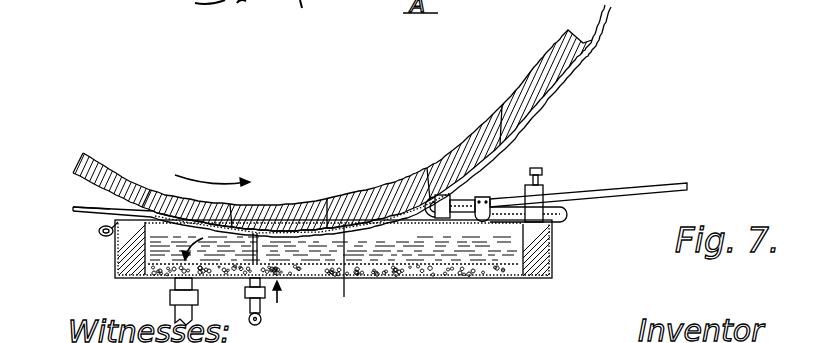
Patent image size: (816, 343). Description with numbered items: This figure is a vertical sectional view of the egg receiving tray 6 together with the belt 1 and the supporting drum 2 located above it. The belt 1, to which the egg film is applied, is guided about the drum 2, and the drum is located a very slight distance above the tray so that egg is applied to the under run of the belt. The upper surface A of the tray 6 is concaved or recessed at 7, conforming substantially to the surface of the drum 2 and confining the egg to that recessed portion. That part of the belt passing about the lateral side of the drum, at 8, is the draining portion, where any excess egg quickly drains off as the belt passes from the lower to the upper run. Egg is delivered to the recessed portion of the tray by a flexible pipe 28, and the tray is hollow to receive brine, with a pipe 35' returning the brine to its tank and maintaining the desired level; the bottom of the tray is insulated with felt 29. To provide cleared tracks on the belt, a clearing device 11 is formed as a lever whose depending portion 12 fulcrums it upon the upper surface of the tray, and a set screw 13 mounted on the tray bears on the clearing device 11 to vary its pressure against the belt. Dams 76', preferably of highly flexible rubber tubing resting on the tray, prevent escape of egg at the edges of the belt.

The supporting drum 2 is at (98, 170).
The draining portion of the belt 8 is at (617, 4).
The belt 1 is at (74, 212).
The dams 76' is at (345, 241).
The egg receiving tray 6 is at (553, 250).
The felt 29 is at (441, 279).
The recessed portion of the tray 7 is at (346, 275).
The pipe 28 is at (266, 310).
The pipe 35' is at (157, 301).
The depending portion 12 is at (483, 197).
The clearing device 11 is at (686, 183).
The set screw 13 is at (546, 178).
The upper surface of the tray A is at (382, 222).